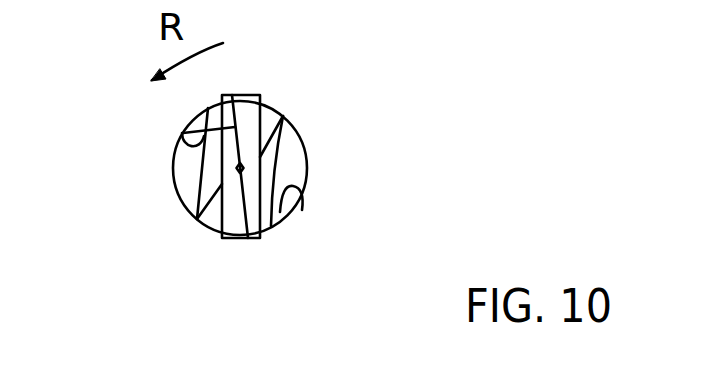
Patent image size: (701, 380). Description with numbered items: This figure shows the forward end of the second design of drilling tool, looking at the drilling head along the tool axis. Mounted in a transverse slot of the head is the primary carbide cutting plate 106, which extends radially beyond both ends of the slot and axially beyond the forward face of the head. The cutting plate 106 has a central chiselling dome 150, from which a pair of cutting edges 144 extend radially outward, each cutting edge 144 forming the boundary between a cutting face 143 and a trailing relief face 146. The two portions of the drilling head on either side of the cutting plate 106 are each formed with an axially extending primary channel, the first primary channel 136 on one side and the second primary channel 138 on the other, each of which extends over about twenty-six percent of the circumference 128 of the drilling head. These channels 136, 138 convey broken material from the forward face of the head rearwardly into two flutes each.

The primary carbide cutting plate 106 is at (247, 102).
The circumference 128 is at (303, 143).
The first primary channel 136 is at (189, 158).
The second primary channel 138 is at (293, 170).
The cutting face 143 is at (266, 229).
The cross member 144 is at (183, 133).
The trailing relief face 146 is at (222, 226).
The central chiselling dome 150 is at (154, 217).